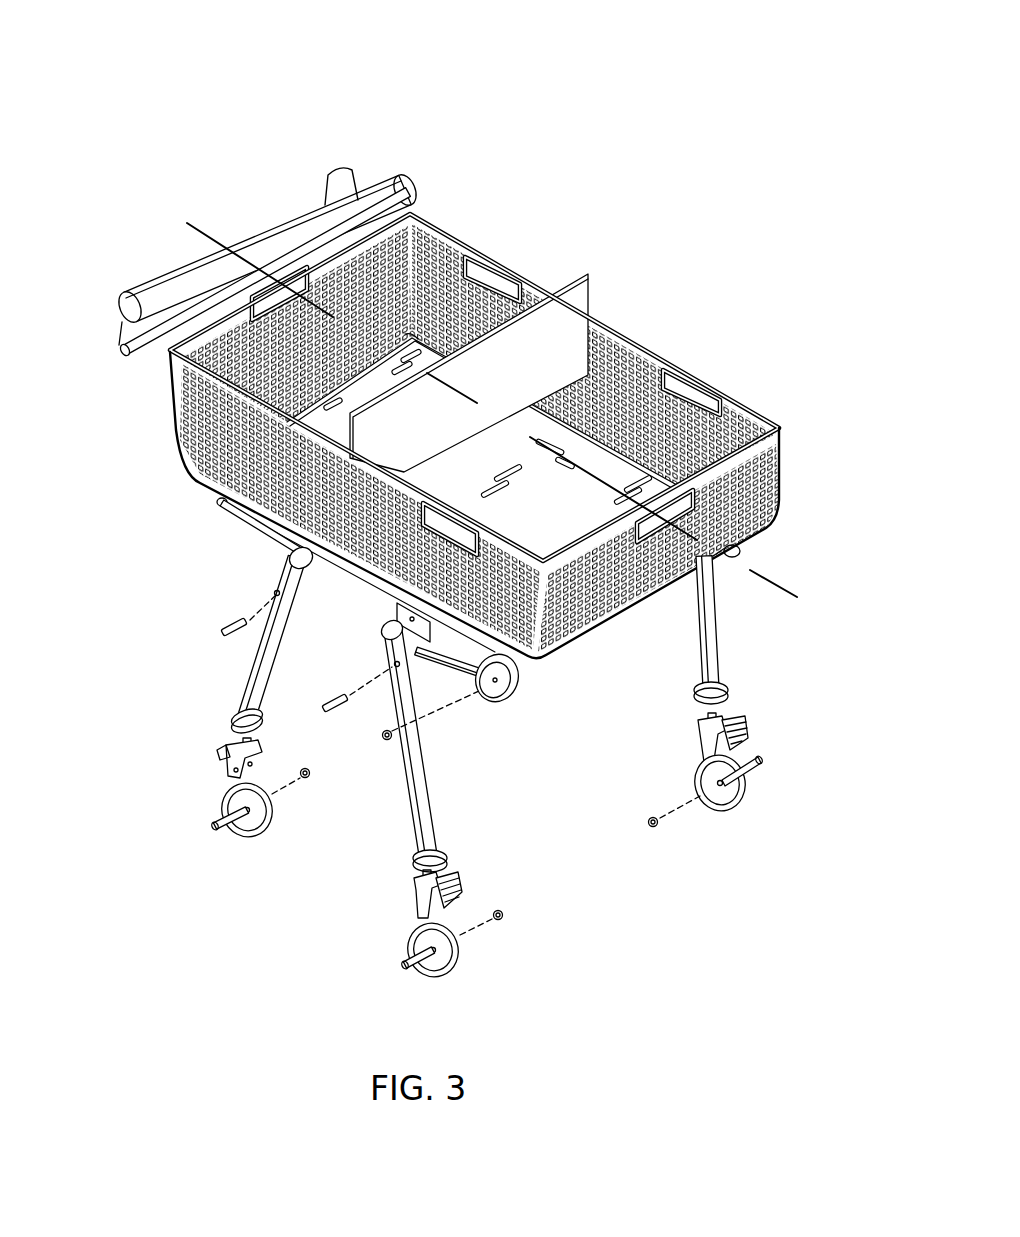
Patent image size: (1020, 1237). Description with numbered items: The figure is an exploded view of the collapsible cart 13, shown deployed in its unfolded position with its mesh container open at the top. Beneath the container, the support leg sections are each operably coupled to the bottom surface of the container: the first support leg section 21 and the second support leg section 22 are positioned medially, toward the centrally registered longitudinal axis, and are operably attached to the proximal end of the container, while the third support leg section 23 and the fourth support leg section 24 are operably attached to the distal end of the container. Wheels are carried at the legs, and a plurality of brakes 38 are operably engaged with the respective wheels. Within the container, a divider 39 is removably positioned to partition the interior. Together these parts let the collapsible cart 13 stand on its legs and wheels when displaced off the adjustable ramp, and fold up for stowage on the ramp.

The collapsible cart 13 is at (453, 499).
The divider 39 is at (578, 292).
The first support leg section 21 is at (180, 610).
The second support leg section 22 is at (538, 677).
The third support leg section 23 is at (449, 803).
The fourth support leg section 24 is at (743, 663).
The brakes 38 is at (222, 748).